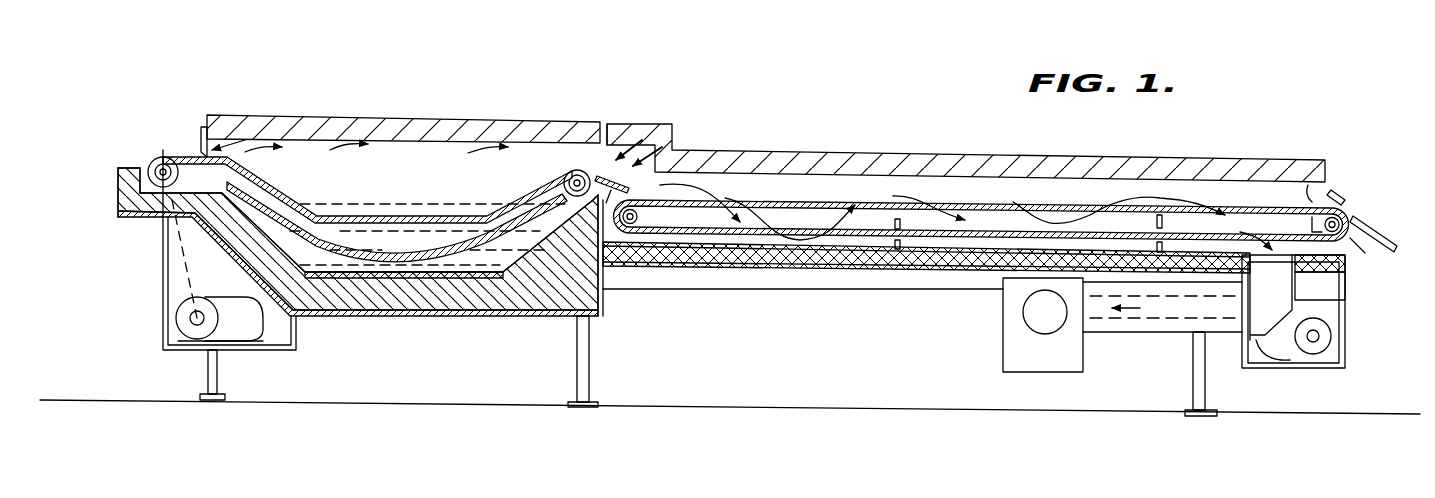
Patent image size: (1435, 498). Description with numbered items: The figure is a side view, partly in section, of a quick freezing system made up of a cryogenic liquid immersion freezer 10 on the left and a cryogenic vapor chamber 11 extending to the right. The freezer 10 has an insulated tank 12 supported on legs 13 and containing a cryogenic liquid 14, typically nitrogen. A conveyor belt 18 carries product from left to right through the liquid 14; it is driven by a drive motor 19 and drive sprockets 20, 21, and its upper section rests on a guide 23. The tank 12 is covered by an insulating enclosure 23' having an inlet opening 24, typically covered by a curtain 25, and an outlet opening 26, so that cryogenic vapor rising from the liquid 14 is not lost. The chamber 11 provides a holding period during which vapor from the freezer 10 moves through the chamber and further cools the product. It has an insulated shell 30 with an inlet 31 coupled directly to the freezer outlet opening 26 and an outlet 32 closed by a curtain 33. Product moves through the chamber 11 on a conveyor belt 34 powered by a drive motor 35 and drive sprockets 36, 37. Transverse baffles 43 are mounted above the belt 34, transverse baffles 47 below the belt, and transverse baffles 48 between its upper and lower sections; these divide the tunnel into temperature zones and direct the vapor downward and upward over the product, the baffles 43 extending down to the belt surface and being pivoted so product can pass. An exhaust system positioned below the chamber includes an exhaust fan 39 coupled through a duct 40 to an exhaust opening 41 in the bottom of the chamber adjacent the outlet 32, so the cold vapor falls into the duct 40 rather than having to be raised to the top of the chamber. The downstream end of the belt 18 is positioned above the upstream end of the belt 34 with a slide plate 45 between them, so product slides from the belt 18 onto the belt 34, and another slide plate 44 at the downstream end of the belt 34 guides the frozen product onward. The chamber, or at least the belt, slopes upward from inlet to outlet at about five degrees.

The cryogenic liquid immersion freezer 10 is at (466, 345).
The cryogenic vapor chamber 11 is at (848, 302).
The insulated tank 12 is at (518, 300).
The legs 13 is at (212, 371).
The cryogenic liquid 14 is at (345, 265).
The conveyor belt 18 is at (400, 214).
The drive motor 19 is at (190, 305).
The drive sprocket 20 is at (165, 160).
The drive sprocket 21 is at (562, 170).
The guide 23 is at (397, 270).
The insulating enclosure 23' is at (407, 95).
The inlet opening 24 is at (276, 115).
The curtain 25 is at (200, 128).
The outlet opening 26 is at (645, 128).
The insulated shell 30 is at (768, 260).
The inlet 31 is at (658, 168).
The outlet 32 is at (1364, 201).
The curtain 33 is at (1338, 190).
The conveyor belt 34 is at (973, 210).
The drive motor 35 is at (1314, 340).
The drive sprocket 36 is at (1312, 212).
The drive sprocket 37 is at (652, 222).
The exhaust fan 39 is at (1032, 361).
The duct 40 is at (1120, 323).
The exhaust opening 41 is at (1286, 272).
The transverse baffles 43 is at (800, 188).
The slide plate 44 is at (1372, 252).
The slide plate 45 is at (690, 175).
The transverse baffles 47 is at (920, 255).
The transverse baffles 48 is at (868, 254).